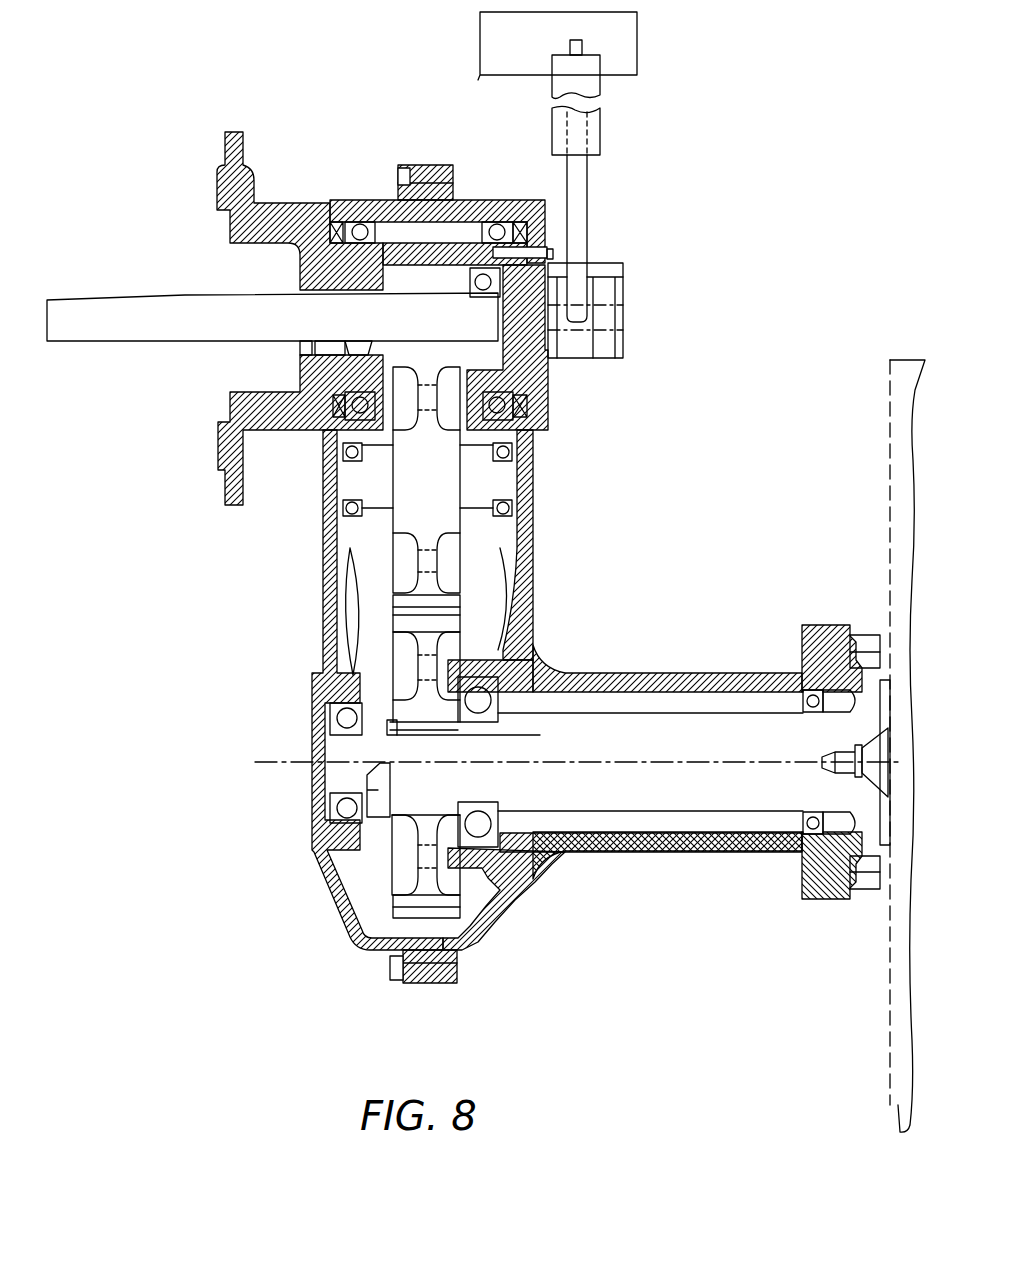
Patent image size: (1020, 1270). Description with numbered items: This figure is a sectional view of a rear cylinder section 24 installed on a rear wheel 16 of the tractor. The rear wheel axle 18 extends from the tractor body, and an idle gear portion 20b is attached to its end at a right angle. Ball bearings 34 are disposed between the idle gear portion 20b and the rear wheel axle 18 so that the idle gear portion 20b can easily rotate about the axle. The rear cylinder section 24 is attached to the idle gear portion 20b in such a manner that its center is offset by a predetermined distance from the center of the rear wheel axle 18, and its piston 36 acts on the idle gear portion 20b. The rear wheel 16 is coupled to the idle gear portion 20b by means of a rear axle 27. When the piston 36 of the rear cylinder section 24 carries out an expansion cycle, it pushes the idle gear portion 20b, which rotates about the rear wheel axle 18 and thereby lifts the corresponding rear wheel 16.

The rear wheel 16 is at (892, 540).
The rear wheel axle 18 is at (170, 330).
The idle gear portion 20b is at (465, 200).
The rear cylinder section 24 is at (595, 128).
The rear axle 27 is at (668, 802).
The ball bearing 34 is at (358, 222).
The piston 36 is at (578, 220).